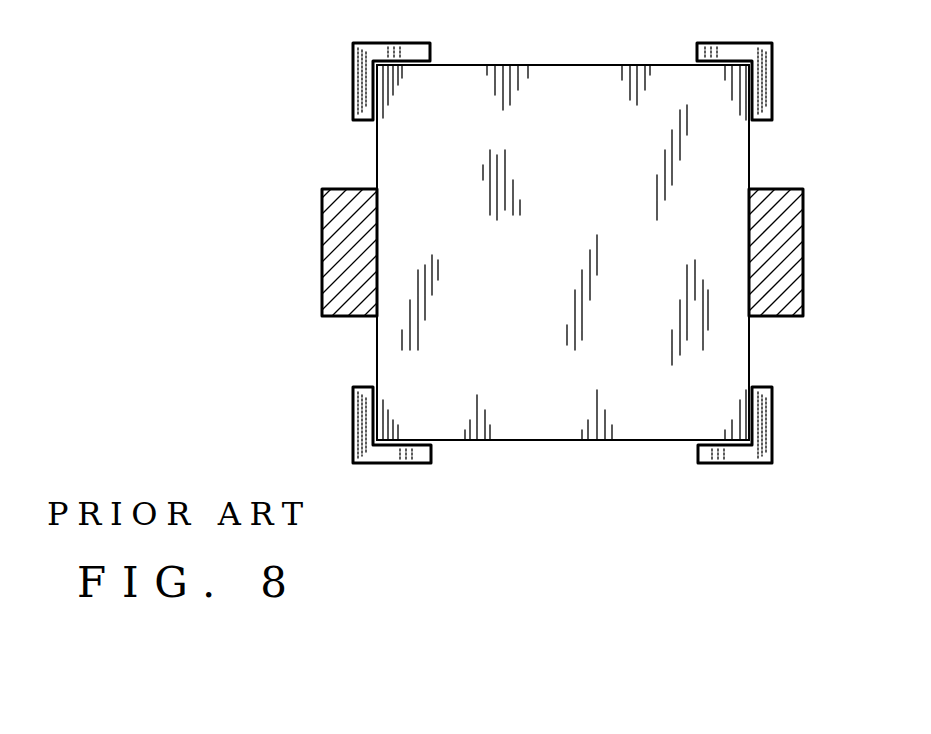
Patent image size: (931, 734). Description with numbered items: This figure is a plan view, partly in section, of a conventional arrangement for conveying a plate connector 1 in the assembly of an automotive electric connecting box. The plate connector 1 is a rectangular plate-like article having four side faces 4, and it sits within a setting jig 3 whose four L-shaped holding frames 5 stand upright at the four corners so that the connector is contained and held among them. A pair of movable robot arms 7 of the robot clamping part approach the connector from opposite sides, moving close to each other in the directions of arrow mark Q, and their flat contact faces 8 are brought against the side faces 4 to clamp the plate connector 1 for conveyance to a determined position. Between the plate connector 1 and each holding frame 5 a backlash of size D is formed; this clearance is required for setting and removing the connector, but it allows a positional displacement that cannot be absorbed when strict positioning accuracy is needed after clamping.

The plate connector 1 is at (585, 65).
The setting jig 3 is at (270, 443).
The side faces 4 is at (487, 65).
The holding frames 5 is at (353, 60).
The robot arms 7 is at (322, 212).
The flat contact faces 8 is at (377, 213).
The arrow mark Q is at (322, 253).
The backlash size D is at (749, 65).